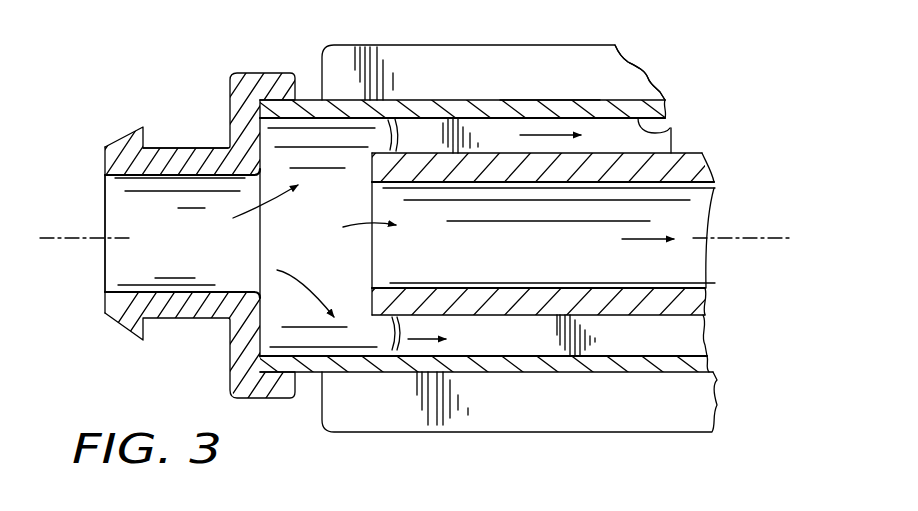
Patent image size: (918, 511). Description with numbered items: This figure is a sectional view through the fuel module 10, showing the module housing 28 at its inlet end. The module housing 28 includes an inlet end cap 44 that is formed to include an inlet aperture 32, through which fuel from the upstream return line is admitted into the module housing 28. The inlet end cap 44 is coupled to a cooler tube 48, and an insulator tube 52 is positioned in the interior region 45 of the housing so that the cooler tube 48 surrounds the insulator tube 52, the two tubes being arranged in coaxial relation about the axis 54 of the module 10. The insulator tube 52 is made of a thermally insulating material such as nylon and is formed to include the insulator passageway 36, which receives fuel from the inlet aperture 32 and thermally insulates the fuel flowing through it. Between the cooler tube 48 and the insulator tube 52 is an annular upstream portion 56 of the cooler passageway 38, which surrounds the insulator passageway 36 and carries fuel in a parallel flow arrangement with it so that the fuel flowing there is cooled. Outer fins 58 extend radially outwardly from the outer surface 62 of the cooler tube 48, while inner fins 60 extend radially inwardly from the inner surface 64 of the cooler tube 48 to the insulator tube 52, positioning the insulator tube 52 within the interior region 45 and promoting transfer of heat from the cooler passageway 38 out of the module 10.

The module 10 is at (137, 80).
The inlet end cap 44 is at (180, 152).
The inlet aperture 32 is at (102, 253).
The outer fins 58 is at (408, 72).
The cooler tube 48 is at (475, 94).
The outer surface 62 is at (541, 100).
The module housing 28 is at (661, 71).
The inner surface 64 is at (672, 130).
The axis 54 is at (752, 238).
The insulator tube 52 is at (490, 297).
The insulator passageway 36 is at (625, 288).
The cooler passageway 38 is at (450, 322).
The annular upstream portion 56 is at (615, 316).
The inner fins 60 is at (385, 134).
The interior region 45 is at (376, 346).